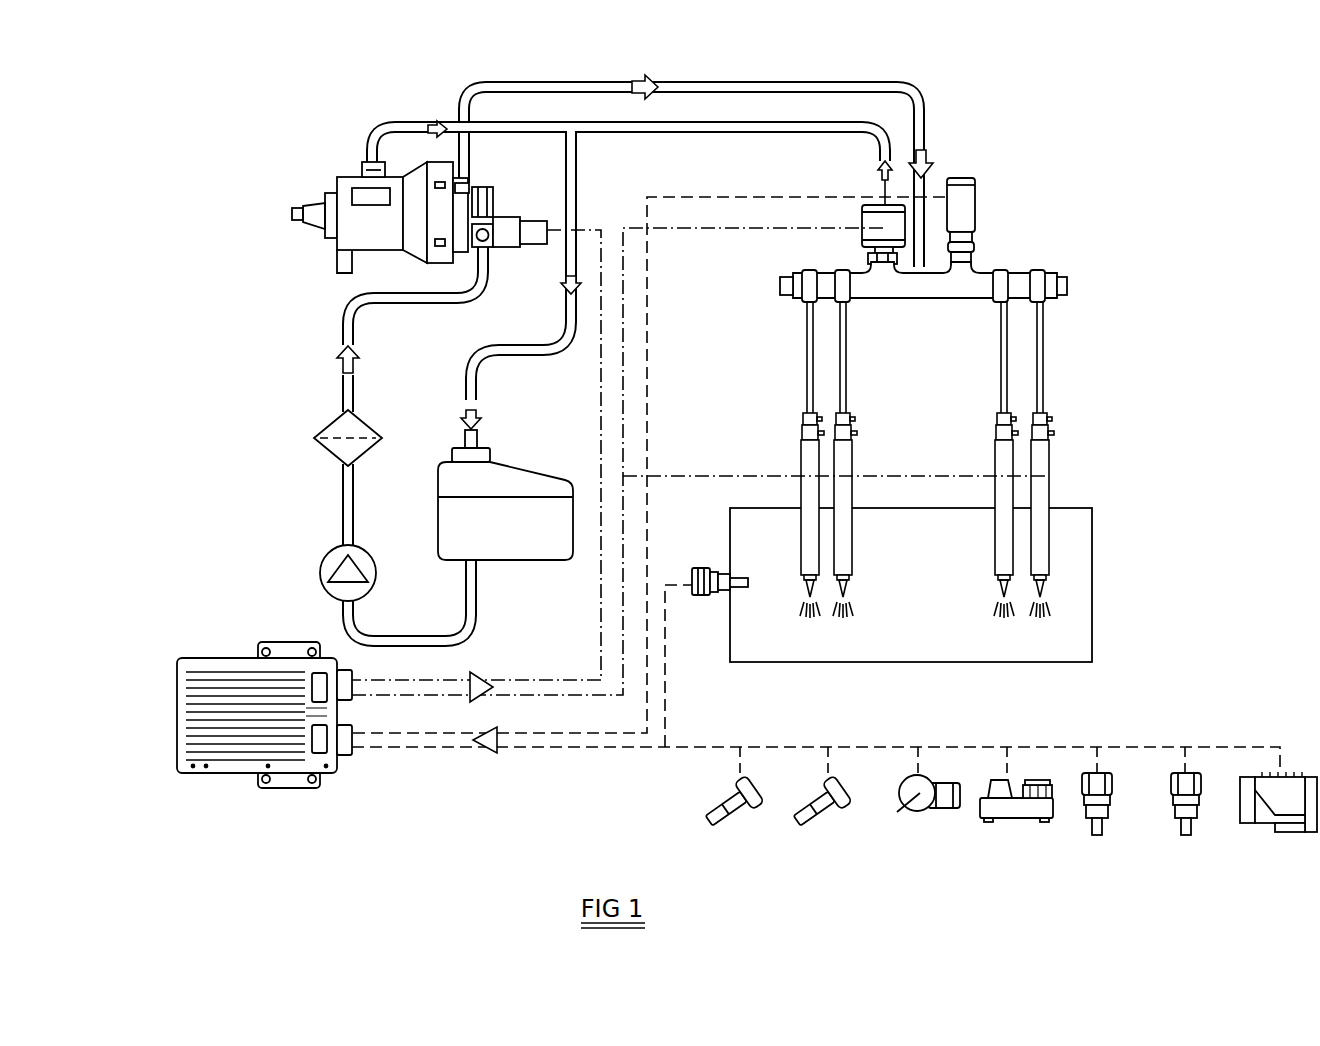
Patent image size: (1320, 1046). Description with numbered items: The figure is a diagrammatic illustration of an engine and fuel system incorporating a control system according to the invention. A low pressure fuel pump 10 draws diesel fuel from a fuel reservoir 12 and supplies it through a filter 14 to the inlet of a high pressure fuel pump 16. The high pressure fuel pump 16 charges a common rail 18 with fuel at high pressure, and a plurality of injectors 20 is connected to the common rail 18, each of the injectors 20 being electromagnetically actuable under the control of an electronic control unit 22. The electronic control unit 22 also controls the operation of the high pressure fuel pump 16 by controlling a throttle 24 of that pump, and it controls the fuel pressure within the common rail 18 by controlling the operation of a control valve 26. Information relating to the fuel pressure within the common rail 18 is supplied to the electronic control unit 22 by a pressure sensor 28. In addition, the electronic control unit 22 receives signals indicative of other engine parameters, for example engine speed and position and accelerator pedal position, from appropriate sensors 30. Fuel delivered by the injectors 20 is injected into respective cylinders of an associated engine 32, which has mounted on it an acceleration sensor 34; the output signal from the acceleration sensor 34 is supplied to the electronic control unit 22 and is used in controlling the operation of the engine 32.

The low pressure fuel pump 10 is at (323, 557).
The fuel reservoir 12 is at (521, 482).
The filter 14 is at (333, 432).
The high pressure fuel pump 16 is at (337, 257).
The common rail 18 is at (972, 280).
The injectors 20 is at (812, 462).
The electronic control unit 22 is at (197, 740).
The throttle 24 is at (510, 226).
The control valve 26 is at (862, 238).
The pressure sensor 28 is at (972, 200).
The sensors 30 is at (737, 808).
The engine 32 is at (1090, 573).
The acceleration sensor 34 is at (703, 597).